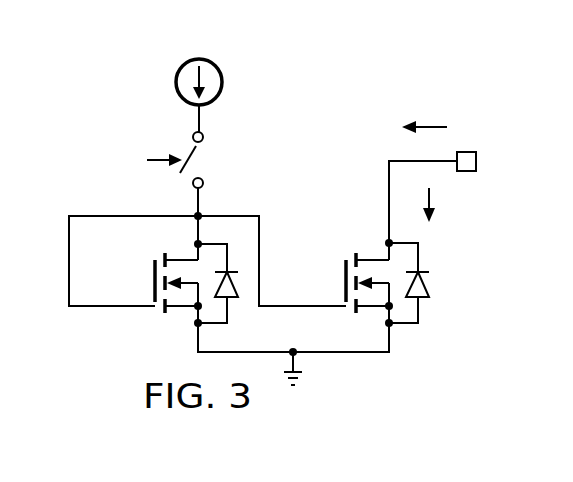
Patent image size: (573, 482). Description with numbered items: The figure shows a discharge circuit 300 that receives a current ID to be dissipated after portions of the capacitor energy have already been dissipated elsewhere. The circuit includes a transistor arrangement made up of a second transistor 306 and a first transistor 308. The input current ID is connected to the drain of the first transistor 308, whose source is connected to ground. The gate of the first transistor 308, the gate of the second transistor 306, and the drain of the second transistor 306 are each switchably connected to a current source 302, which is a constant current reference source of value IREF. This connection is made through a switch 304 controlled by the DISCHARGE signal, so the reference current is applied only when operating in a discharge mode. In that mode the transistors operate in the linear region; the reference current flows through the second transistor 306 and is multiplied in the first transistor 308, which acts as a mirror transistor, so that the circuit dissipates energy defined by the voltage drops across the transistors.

The discharge circuit 300 is at (317, 80).
The current source 302 is at (176, 80).
The switch S3 304 is at (188, 150).
The second transistor 306 is at (155, 272).
The first transistor 308 is at (346, 272).